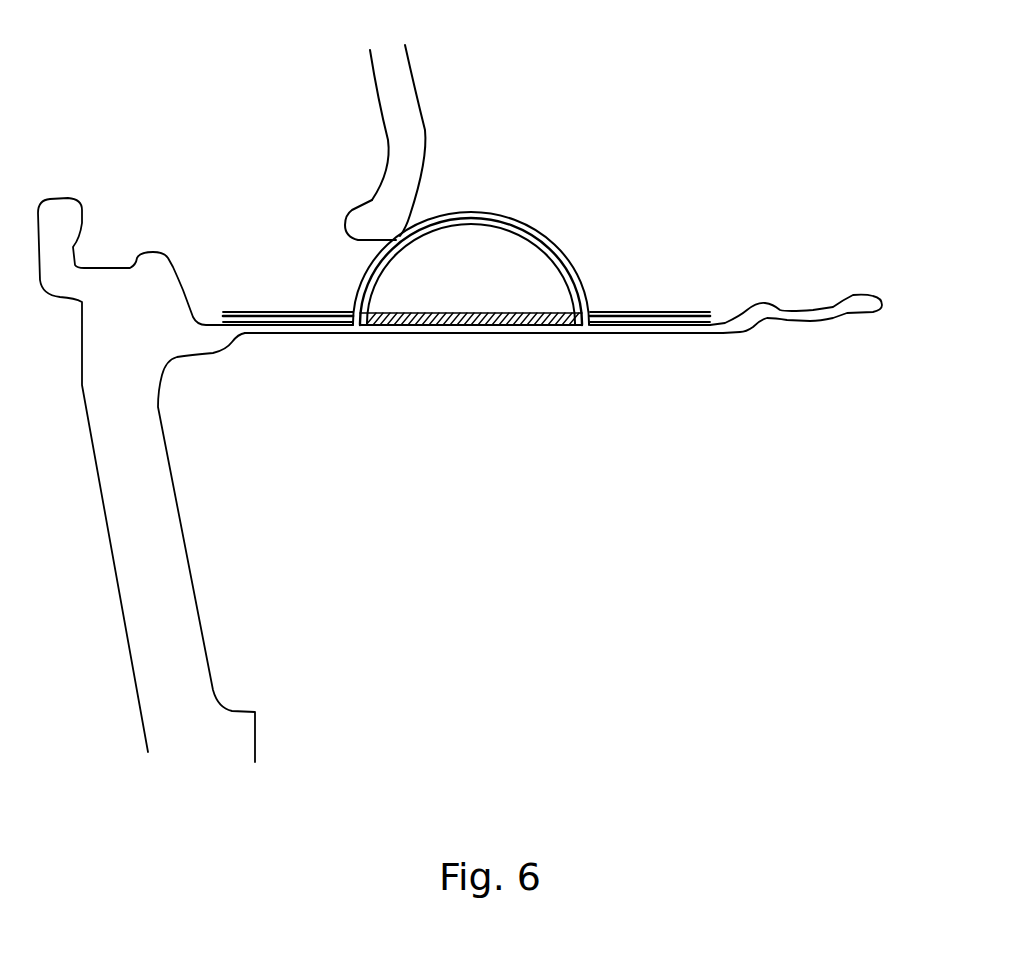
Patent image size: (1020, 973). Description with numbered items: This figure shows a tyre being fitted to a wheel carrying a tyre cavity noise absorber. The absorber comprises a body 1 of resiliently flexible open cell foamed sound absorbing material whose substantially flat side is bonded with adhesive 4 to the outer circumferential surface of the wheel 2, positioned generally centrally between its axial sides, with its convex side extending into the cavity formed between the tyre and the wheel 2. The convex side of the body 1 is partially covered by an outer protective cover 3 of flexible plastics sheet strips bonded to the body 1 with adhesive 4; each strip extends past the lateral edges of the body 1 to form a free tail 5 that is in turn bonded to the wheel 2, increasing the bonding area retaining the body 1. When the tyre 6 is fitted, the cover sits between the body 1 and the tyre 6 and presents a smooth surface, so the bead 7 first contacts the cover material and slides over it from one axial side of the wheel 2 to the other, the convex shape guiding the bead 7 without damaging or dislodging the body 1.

The body 1 is at (582, 151).
The wheel 2 is at (423, 455).
The outer protective cover 3 is at (700, 220).
The adhesive 4 is at (690, 146).
The free tail 5 is at (217, 172).
The tyre 6 is at (516, 80).
The bead 7 is at (300, 90).